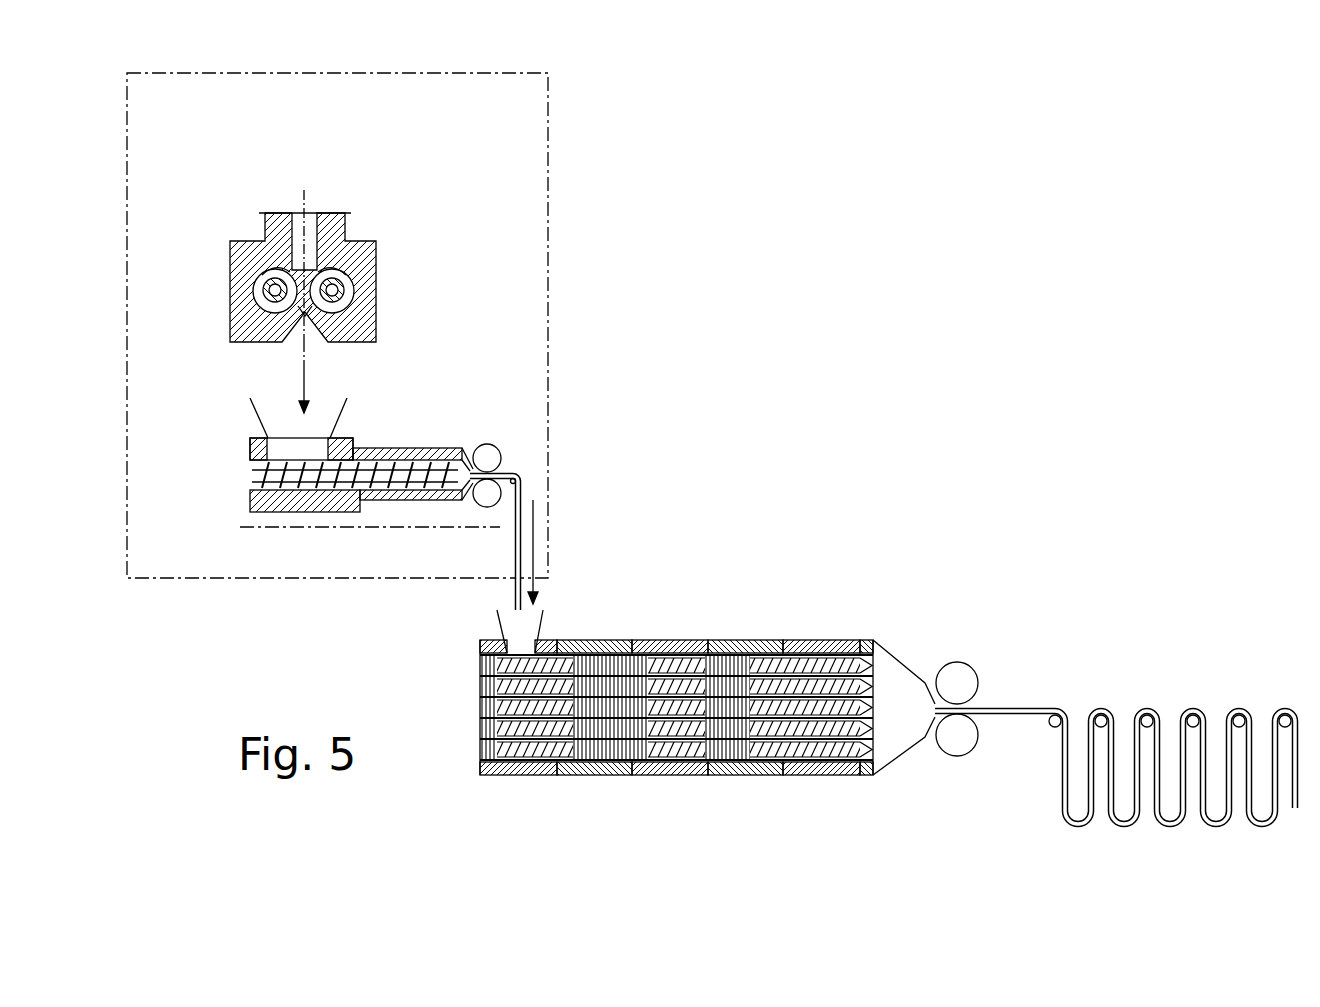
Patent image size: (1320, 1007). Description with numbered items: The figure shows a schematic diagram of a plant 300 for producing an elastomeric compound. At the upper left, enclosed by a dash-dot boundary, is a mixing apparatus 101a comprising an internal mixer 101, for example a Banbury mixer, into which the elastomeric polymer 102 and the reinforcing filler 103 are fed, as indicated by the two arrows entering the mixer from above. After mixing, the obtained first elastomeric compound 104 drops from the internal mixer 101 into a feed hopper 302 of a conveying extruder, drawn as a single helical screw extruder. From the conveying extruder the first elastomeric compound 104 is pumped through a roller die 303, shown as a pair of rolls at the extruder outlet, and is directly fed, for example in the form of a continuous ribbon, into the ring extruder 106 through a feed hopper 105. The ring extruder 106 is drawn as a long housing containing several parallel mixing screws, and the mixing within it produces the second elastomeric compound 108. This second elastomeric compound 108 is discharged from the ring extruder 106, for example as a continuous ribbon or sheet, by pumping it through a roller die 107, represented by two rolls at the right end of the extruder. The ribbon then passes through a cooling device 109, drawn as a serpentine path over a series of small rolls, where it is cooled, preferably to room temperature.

The plant 300 is at (838, 340).
The mixing apparatus 101a is at (513, 152).
The internal mixer 101 is at (376, 265).
The elastomeric polymer 102 is at (291, 217).
The reinforcing filler 103 is at (311, 217).
The first elastomeric compound 104 is at (303, 373).
The feed hopper 302 is at (323, 407).
The roller die 303 is at (488, 450).
The feed hopper 105 is at (525, 627).
The ring extruder 106 is at (735, 647).
The roller die 107 is at (955, 677).
The second elastomeric compound 108 is at (1032, 708).
The cooling device 109 is at (1193, 720).